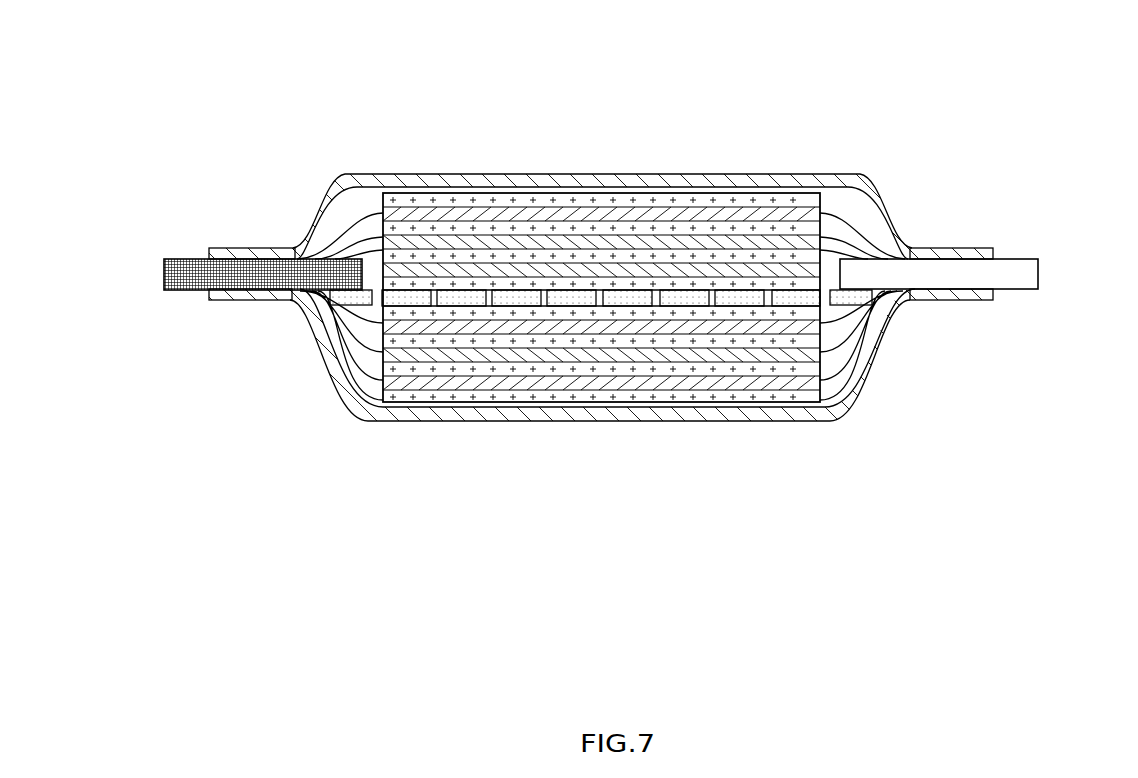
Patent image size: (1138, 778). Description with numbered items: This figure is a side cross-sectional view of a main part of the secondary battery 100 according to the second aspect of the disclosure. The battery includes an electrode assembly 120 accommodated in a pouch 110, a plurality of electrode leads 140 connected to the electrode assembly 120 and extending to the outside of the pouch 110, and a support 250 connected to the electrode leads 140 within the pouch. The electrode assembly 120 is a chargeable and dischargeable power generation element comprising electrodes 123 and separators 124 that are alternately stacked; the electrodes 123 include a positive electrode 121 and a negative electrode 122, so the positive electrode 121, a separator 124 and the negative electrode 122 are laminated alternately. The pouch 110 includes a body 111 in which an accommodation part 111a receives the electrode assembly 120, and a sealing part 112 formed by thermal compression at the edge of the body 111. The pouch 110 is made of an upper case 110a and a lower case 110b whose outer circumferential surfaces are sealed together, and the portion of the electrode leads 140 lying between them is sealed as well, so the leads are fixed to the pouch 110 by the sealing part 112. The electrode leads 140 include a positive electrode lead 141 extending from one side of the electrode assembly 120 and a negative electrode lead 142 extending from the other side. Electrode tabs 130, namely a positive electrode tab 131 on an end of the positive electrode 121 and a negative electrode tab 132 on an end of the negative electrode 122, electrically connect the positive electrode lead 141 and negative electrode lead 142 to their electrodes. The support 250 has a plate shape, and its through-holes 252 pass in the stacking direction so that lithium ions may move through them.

The secondary battery 100 is at (958, 40).
The pouch 110 is at (602, 278).
The upper case 110a is at (602, 174).
The lower case 110b is at (730, 421).
The body 111 is at (416, 174).
The accommodation part 111a is at (370, 386).
The sealing part 112 is at (218, 241).
The electrode assembly 120 is at (601, 346).
The positive electrode 121 is at (397, 383).
The negative electrode 122 is at (800, 358).
The electrodes 123 is at (601, 390).
The separator 124 is at (602, 402).
The electrode tabs 130 is at (601, 359).
The positive electrode tab 131 is at (346, 199).
The negative electrode tab 132 is at (857, 199).
The electrode leads 140 is at (605, 416).
The positive electrode lead 141 is at (183, 274).
The negative electrode lead 142 is at (1020, 274).
The support 250 is at (868, 298).
The through-holes 252 is at (352, 298).